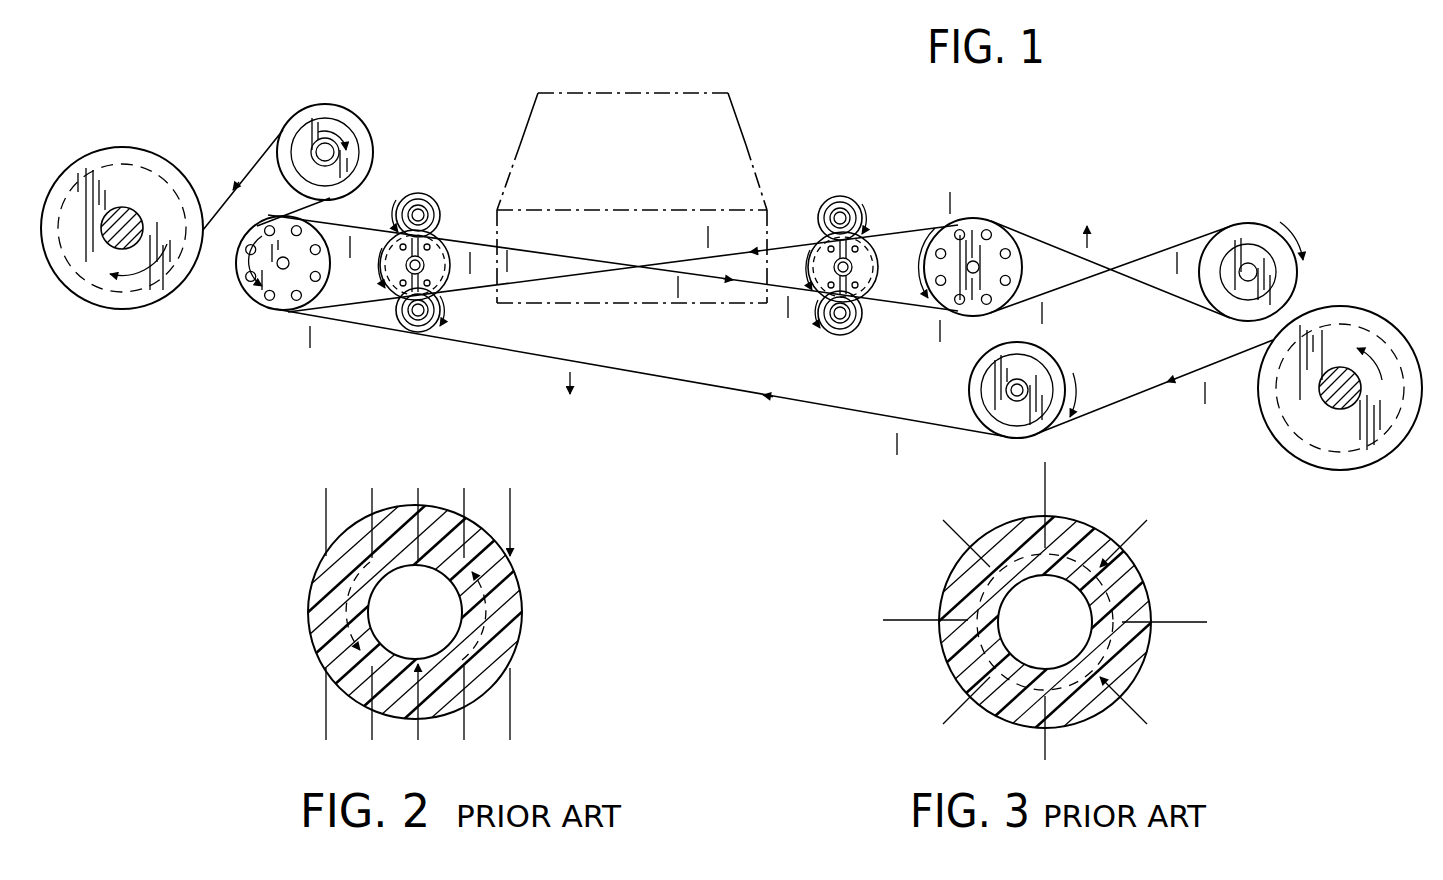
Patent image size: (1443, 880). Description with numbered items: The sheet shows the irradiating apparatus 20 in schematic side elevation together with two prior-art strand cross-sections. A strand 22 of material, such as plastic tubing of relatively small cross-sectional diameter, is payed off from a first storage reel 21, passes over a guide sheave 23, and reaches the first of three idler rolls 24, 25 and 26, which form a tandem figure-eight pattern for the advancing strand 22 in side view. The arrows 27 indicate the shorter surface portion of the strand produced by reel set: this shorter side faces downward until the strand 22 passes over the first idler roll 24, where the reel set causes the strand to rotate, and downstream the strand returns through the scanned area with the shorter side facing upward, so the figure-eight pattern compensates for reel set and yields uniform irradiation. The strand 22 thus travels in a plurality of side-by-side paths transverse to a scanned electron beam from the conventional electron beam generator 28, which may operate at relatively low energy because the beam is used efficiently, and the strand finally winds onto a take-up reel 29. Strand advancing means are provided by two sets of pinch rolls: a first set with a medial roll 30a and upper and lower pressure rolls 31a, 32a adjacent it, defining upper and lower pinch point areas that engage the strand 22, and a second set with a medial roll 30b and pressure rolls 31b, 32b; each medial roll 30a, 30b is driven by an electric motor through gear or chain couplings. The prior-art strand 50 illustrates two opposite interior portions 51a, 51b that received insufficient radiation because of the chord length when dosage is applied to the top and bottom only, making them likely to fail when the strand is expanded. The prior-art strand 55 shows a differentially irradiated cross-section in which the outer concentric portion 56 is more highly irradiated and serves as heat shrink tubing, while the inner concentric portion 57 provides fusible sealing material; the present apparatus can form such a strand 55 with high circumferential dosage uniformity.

In FIG. 1, the irradiating apparatus 20 is at (520, 92).
In FIG. 1, the first storage reel 21 is at (1350, 307).
In FIG. 1, the strand 22 is at (267, 148).
In FIG. 1, the guide sheave 23 is at (1043, 357).
In FIG. 1, the first idler roll 24 is at (257, 303).
In FIG. 1, the second idler roll 25 is at (987, 222).
In FIG. 1, the third idler roll 26 is at (1253, 225).
In FIG. 1, the arrows indicating shorter surface portion 27 is at (900, 424).
In FIG. 1, the electron beam generator 28 is at (737, 110).
In FIG. 1, the take-up reel 29 is at (132, 148).
In FIG. 1, the medial roll 30a is at (447, 257).
In FIG. 1, the medial roll 30b is at (868, 245).
In FIG. 1, the upper pressure roll 31a is at (457, 177).
In FIG. 1, the upper pressure roll 31b is at (840, 197).
In FIG. 1, the lower pressure roll 32a is at (427, 320).
In FIG. 1, the lower pressure roll 32b is at (850, 330).
In FIG. 2, the strand 50 is at (550, 558).
In FIG. 2, the insufficiently irradiated interior portion 51a is at (335, 588).
In FIG. 2, the insufficiently irradiated interior portion 51b is at (517, 633).
In FIG. 3, the strand 55 is at (1150, 550).
In FIG. 3, the outer concentric portion 56 is at (958, 578).
In FIG. 3, the inner concentric portion 57 is at (1038, 540).